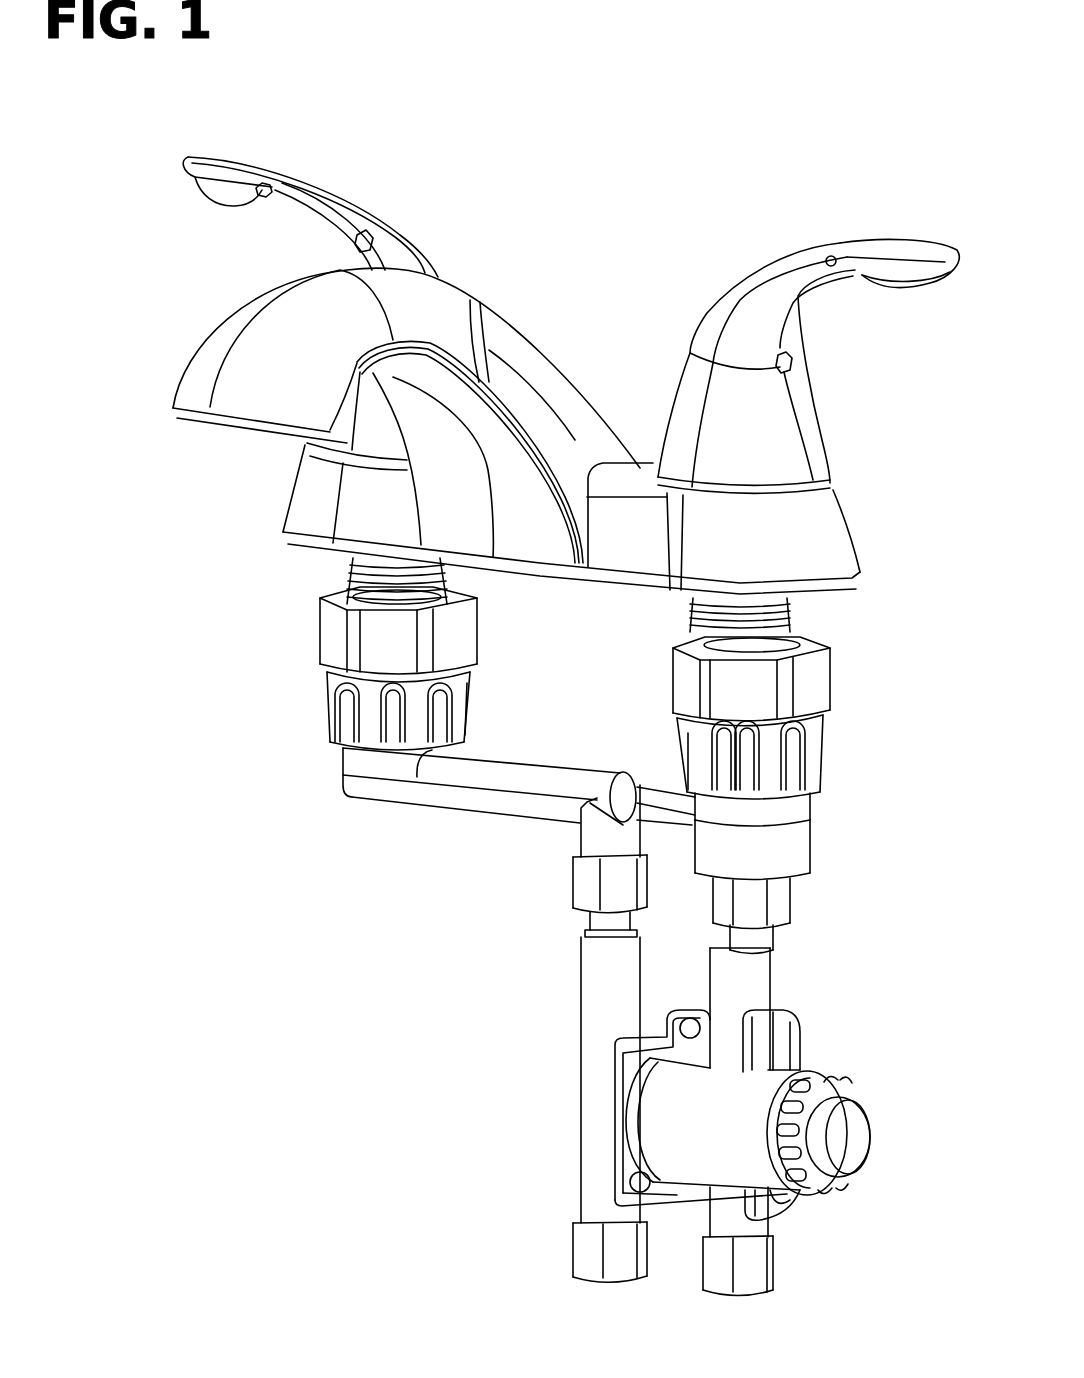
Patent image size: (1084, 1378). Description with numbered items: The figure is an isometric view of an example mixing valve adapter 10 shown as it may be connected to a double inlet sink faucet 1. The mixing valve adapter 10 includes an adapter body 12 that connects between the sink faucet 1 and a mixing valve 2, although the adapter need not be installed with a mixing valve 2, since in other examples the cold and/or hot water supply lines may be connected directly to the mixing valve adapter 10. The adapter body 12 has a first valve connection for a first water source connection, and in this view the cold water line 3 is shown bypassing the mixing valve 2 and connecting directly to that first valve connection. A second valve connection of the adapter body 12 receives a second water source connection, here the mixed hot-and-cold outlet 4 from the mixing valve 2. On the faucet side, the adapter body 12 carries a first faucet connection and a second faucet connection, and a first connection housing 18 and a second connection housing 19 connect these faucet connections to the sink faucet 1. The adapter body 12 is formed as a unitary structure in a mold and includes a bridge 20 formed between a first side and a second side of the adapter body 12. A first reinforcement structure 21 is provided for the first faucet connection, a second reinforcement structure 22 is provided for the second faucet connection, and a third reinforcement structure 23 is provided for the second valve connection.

The double inlet sink faucet 1 is at (568, 278).
The mixing valve 2 is at (869, 1193).
The cold water line 3 is at (580, 1045).
The mixed hot-and-cold outlet 4 is at (775, 978).
The mixing valve adapter 10 is at (435, 878).
The adapter body 12 is at (398, 810).
The first connection housing 18 is at (490, 643).
The second connection housing 19 is at (657, 700).
The bridge 20 is at (655, 775).
The first reinforcement structure 21 is at (340, 762).
The second reinforcement structure 22 is at (808, 803).
The third reinforcement structure 23 is at (808, 851).